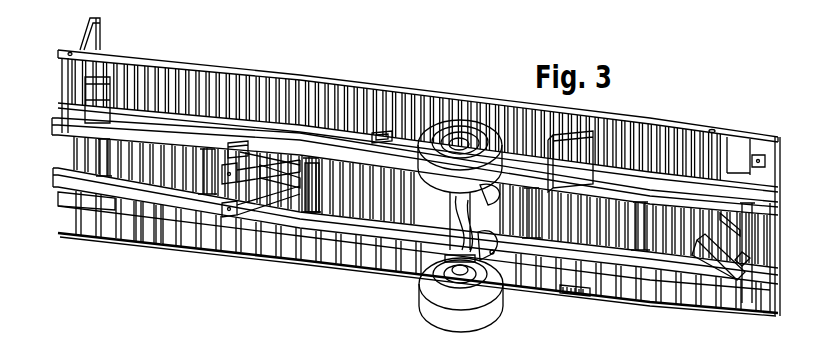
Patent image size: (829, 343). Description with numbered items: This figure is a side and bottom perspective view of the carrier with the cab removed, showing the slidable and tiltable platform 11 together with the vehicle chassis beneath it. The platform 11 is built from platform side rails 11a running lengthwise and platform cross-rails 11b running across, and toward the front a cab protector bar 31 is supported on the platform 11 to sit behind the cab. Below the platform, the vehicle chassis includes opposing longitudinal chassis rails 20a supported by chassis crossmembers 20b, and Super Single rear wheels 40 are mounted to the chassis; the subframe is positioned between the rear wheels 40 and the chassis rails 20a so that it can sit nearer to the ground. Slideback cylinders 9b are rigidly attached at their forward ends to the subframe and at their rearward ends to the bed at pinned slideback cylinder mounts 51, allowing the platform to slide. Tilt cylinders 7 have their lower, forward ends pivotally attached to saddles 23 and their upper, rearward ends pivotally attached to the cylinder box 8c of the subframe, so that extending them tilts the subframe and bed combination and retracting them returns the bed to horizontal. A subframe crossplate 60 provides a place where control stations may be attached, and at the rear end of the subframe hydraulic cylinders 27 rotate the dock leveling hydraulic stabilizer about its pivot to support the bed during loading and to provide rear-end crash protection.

The platform 11 is at (716, 127).
The platform side rails 11a is at (449, 100).
The platform cross-rails 11b is at (180, 95).
The cab protector bar 31 is at (102, 18).
The longitudinal chassis rails 20a is at (62, 170).
The chassis crossmembers 20b is at (152, 222).
The saddles 23 is at (239, 143).
The slideback cylinders 9b is at (256, 168).
The tilt cylinders 7 is at (282, 160).
The cylinder box 8c is at (312, 228).
The slideback cylinder mounts 51 is at (386, 132).
The subframe crossplate 60 is at (586, 160).
The rear wheels 40 is at (488, 308).
The hydraulic cylinders 27 is at (722, 280).